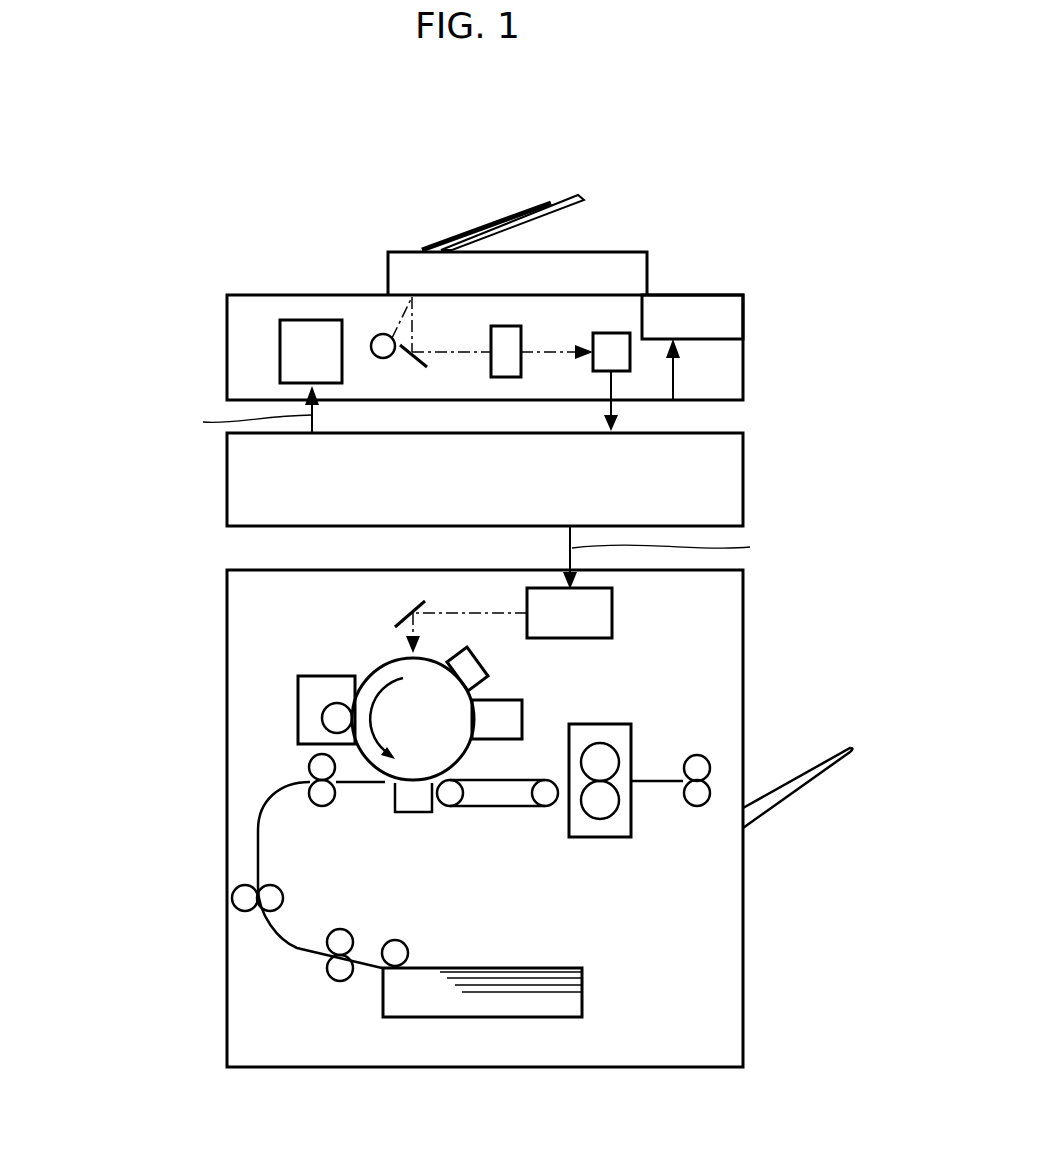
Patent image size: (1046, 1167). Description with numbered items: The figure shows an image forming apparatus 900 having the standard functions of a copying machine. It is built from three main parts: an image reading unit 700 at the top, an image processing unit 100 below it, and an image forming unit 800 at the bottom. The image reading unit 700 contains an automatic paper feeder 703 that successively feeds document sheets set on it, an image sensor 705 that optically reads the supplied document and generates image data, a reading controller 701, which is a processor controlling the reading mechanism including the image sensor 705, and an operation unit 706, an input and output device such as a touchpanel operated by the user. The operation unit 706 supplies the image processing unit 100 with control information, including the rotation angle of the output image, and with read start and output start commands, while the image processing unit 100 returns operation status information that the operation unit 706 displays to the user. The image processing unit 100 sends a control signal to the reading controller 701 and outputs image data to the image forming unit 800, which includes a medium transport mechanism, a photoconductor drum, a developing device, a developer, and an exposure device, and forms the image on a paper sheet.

The image forming apparatus 900 is at (329, 200).
The image reading unit 700 is at (107, 295).
The reading controller 701 is at (308, 330).
The automatic paper feeder 703 is at (648, 253).
The image sensor 705 is at (612, 389).
The operation unit 706 is at (720, 300).
The image processing unit 100 is at (232, 500).
The image forming unit 800 is at (107, 1076).